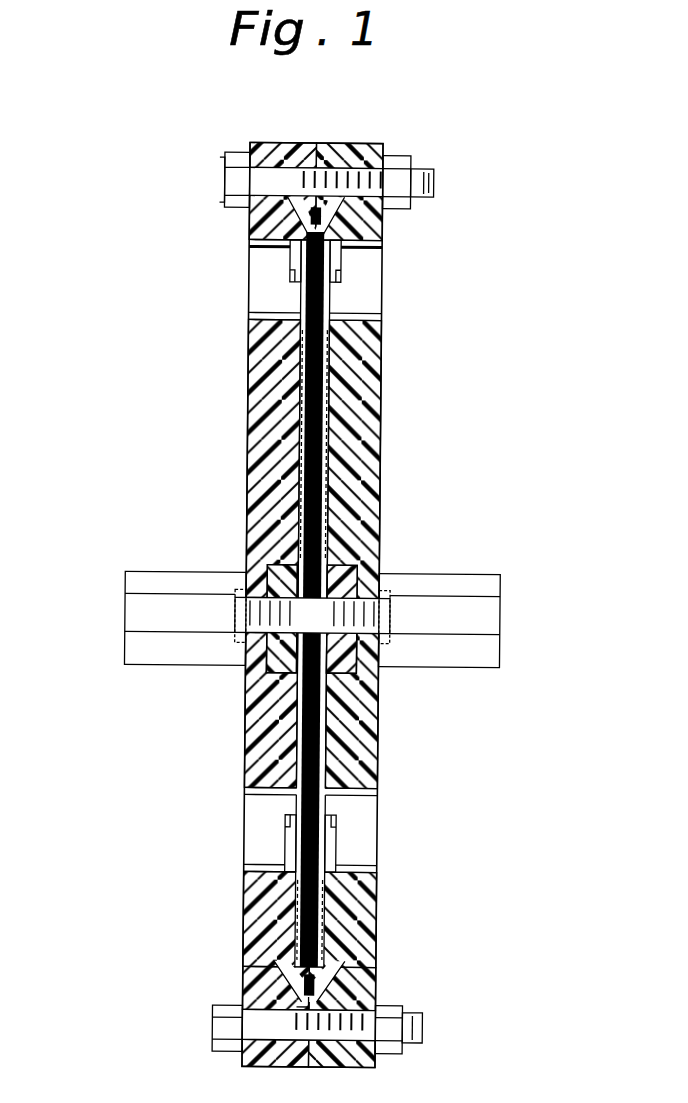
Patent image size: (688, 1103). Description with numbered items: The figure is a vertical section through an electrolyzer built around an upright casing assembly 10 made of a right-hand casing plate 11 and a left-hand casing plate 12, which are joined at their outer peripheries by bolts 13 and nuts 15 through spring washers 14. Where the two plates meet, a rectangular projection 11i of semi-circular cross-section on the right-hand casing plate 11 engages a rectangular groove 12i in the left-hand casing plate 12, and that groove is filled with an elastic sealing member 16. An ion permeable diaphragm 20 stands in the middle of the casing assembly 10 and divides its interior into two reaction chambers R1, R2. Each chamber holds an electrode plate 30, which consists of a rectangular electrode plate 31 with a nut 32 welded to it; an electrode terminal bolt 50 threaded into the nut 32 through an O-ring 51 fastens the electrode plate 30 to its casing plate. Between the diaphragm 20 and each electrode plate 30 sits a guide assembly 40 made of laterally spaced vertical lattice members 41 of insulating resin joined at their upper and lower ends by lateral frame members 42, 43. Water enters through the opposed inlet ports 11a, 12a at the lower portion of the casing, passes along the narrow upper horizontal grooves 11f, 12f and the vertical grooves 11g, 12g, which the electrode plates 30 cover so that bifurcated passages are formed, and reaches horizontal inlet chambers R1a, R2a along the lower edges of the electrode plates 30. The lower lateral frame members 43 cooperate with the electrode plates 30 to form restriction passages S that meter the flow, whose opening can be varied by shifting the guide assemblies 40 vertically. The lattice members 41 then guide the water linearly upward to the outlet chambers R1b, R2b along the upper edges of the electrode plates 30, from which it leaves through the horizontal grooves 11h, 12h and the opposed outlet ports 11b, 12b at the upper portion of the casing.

The casing assembly 10 is at (308, 210).
The right-hand casing plate 11 is at (379, 402).
The left-hand casing plate 12 is at (247, 402).
The bolt 13 is at (232, 180).
The spring washer 14 is at (386, 172).
The nut 15 is at (412, 166).
The elastic sealing member 16 is at (298, 190).
The ion permeable diaphragm 20 is at (318, 772).
The electrode plate 30 is at (282, 566).
The rectangular electrode plate 31 is at (272, 793).
The nut 32 is at (282, 660).
The guide assembly 40 is at (302, 735).
The vertical lattice member 41 is at (308, 452).
The upper lateral frame member 42 is at (290, 250).
The lower lateral frame member 43 is at (305, 990).
The electrode terminal bolt 50 is at (130, 616).
The O-ring 51 is at (240, 592).
The inlet port 11a is at (358, 866).
The outlet port 11b is at (360, 318).
The upper horizontal groove 11f is at (335, 833).
The vertical groove 11g is at (330, 903).
The horizontal groove 11h is at (355, 302).
The rectangular projection 11i is at (340, 212).
The inlet port 12a is at (262, 866).
The outlet port 12b is at (268, 318).
The upper horizontal groove 12f is at (290, 833).
The vertical groove 12g is at (300, 902).
The horizontal groove 12h is at (272, 305).
The rectangular groove 12i is at (247, 216).
The reaction chamber R1 is at (325, 488).
The reaction chamber R2 is at (300, 488).
The inlet chamber R1a is at (352, 930).
The inlet chamber R2a is at (272, 930).
The outlet chamber R1b is at (336, 278).
The outlet chamber R2b is at (290, 275).
The restriction passage S is at (280, 966).